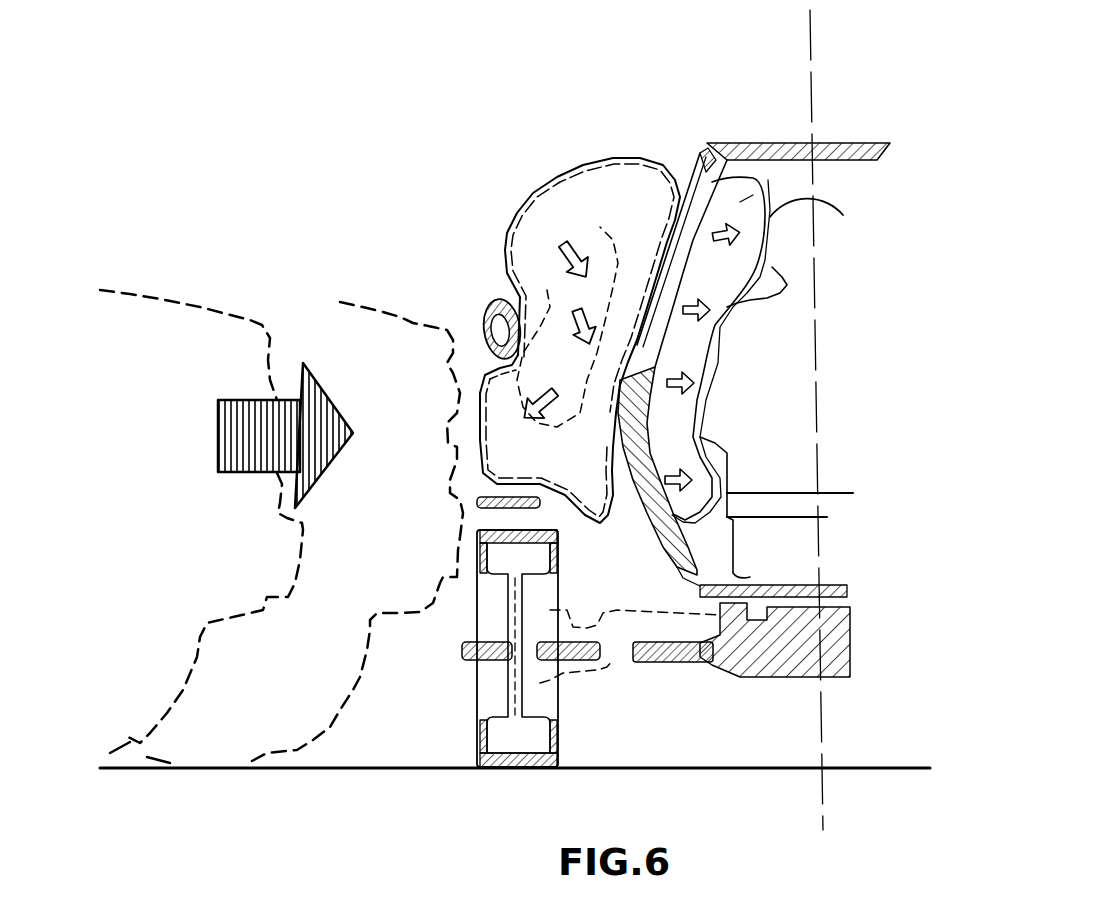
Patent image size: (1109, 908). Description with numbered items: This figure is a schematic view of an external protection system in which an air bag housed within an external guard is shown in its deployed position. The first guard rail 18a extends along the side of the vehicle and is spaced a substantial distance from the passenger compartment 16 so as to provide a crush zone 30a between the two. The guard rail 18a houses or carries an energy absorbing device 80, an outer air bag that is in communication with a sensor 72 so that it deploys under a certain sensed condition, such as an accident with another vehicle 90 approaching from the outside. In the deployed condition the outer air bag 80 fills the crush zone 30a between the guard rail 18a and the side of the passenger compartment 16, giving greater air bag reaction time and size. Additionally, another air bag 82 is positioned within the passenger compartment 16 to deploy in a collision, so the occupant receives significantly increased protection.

The passenger compartment 16 is at (766, 140).
The first guard rail 18a is at (487, 327).
The crush zone 30a is at (508, 439).
The sensor 72 is at (483, 350).
The energy absorbing device 80 is at (569, 196).
The air bag 82 is at (770, 185).
The another vehicle 90 is at (208, 292).